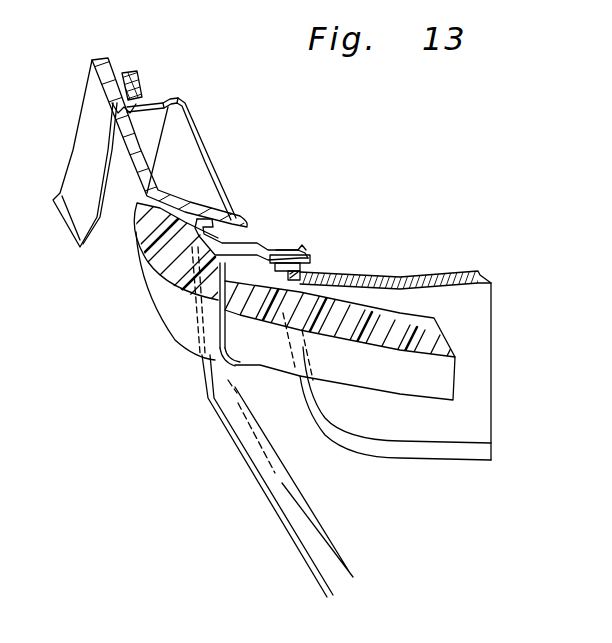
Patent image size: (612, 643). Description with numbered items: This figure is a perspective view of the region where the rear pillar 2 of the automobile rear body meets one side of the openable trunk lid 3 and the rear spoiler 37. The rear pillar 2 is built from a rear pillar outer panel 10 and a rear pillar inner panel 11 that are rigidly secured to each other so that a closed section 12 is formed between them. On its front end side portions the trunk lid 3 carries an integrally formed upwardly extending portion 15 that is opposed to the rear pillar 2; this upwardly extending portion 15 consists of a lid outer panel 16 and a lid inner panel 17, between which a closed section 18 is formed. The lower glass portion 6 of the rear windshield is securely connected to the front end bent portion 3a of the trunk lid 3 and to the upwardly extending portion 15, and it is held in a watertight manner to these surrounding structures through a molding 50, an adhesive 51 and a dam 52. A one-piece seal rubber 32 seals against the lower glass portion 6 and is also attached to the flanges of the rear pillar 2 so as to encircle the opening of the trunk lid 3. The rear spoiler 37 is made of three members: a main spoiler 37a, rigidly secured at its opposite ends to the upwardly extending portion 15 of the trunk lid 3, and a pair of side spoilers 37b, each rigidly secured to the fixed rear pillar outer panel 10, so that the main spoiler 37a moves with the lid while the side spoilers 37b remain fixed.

The rear pillar 2 is at (120, 172).
The trunk lid 3 is at (460, 557).
The front end bent portion 3a is at (427, 452).
The lower glass portion 6 is at (485, 348).
The rear pillar outer panel 10 is at (120, 148).
The rear pillar inner panel 11 is at (192, 142).
The closed section 12 is at (189, 158).
The upwardly extending portion 15 is at (290, 232).
The lid outer panel 16 is at (297, 250).
The lid inner panel 17 is at (270, 247).
The closed section 18 is at (177, 277).
The seal rubber 32 is at (243, 227).
The rear spoiler 37 is at (458, 378).
The main spoiler 37a is at (372, 384).
The side spoiler 37b is at (163, 308).
The molding 50 is at (268, 350).
The adhesive 51 is at (301, 258).
The dam 52 is at (302, 272).